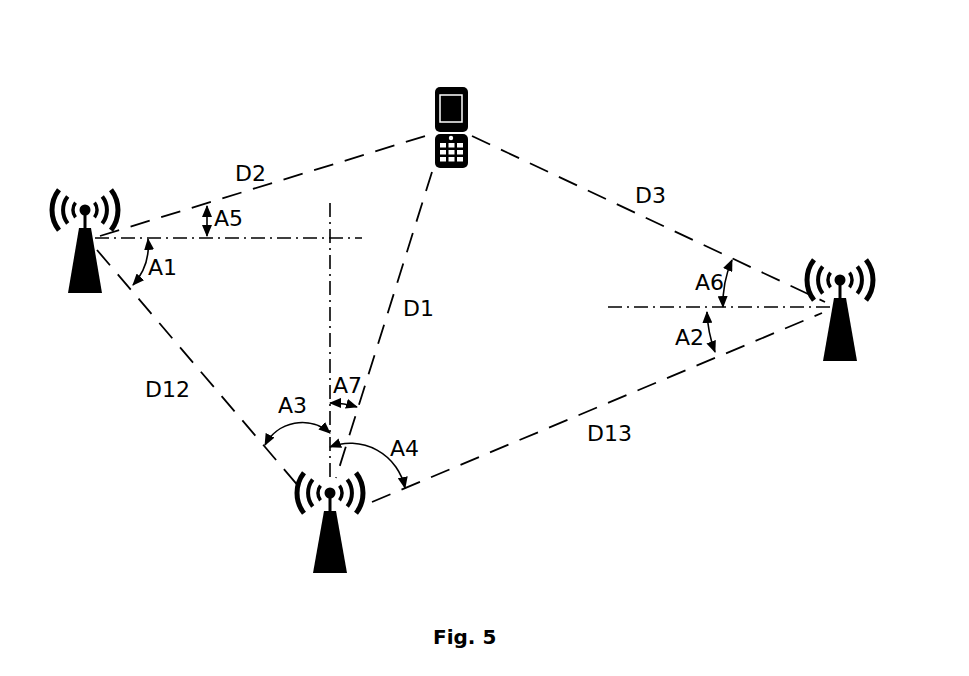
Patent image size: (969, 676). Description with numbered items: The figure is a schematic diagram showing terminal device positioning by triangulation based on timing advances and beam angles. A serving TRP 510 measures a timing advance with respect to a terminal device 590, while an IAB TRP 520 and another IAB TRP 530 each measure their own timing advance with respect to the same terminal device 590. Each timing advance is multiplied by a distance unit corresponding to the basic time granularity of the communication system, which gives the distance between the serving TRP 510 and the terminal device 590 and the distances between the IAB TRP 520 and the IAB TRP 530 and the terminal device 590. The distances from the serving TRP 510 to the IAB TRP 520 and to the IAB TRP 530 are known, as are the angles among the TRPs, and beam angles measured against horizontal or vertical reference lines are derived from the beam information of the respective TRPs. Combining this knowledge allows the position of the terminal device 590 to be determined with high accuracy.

The serving TRP 510 is at (330, 540).
The IAB TRP 520 is at (85, 260).
The IAB TRP 530 is at (840, 330).
The terminal device 590 is at (478, 110).